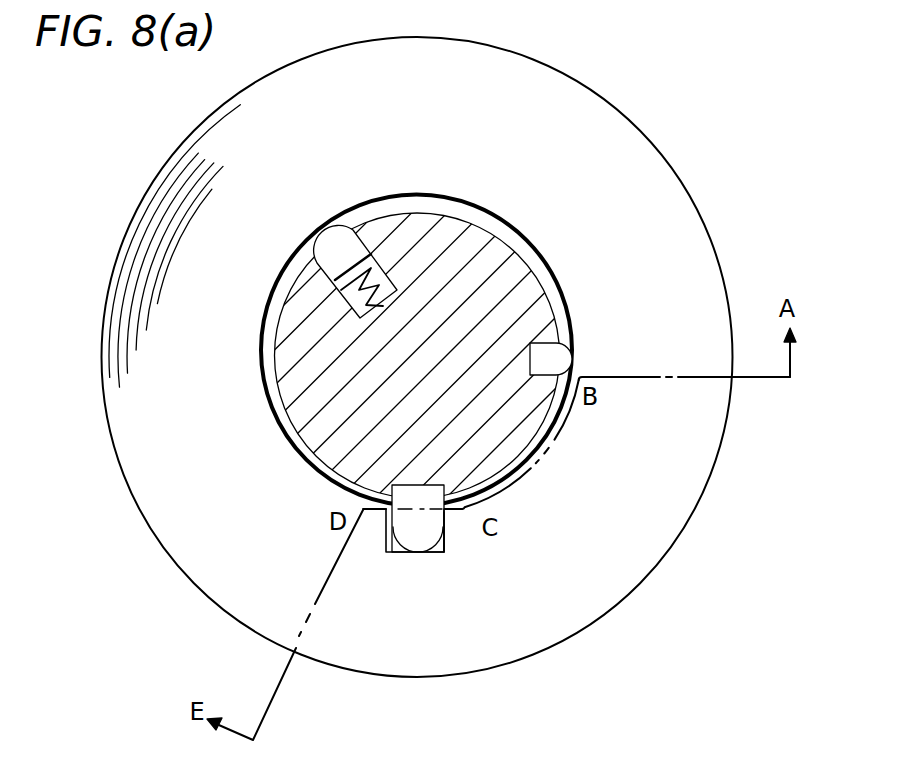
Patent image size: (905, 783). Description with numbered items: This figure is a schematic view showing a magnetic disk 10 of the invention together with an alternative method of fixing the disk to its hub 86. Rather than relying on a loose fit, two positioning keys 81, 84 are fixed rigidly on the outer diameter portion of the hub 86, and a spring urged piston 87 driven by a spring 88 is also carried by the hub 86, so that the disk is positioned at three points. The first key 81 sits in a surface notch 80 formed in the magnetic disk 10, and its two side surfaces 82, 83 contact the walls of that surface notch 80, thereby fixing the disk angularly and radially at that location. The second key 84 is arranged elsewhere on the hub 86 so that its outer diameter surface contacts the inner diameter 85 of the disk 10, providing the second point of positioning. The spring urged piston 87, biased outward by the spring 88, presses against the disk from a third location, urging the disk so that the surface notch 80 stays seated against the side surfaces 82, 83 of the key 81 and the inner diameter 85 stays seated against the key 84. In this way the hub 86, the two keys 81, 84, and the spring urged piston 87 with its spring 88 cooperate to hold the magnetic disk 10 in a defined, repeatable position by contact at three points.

The magnetic disk 10 is at (663, 157).
The surface notch 80 is at (383, 542).
The positioning key 81 is at (445, 542).
The side surface 82 is at (433, 537).
The side surface 83 is at (420, 553).
The positioning key 84 is at (553, 352).
The inner diameter 85 is at (558, 288).
The hub 86 is at (505, 267).
The spring urged piston 87 is at (340, 234).
The spring 88 is at (377, 288).